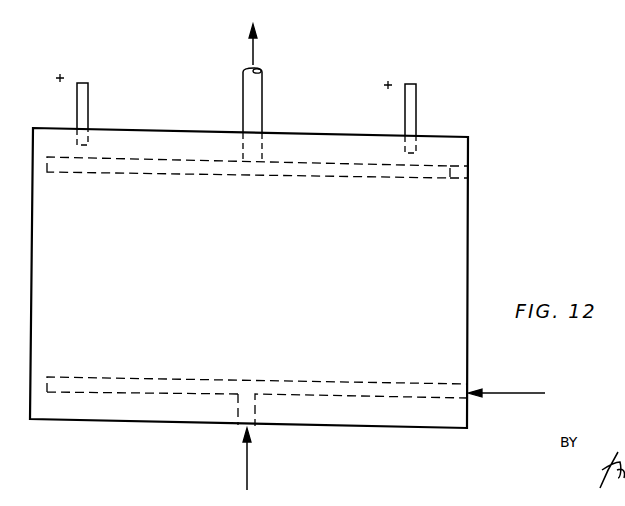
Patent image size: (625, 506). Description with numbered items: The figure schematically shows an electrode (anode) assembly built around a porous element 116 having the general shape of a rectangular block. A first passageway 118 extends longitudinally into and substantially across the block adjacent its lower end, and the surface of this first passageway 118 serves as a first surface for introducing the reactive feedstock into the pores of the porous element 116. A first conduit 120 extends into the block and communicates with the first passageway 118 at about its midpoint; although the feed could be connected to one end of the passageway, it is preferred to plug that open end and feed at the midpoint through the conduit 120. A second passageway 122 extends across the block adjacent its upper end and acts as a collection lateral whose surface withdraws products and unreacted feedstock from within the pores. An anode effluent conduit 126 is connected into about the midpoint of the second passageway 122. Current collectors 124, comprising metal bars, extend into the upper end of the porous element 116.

The porous element 116 is at (468, 240).
The first passageway 118 is at (164, 378).
The first conduit 120 is at (250, 443).
The second passageway 122 is at (218, 175).
The current collectors 124 is at (88, 100).
The anode effluent conduit 126 is at (262, 103).